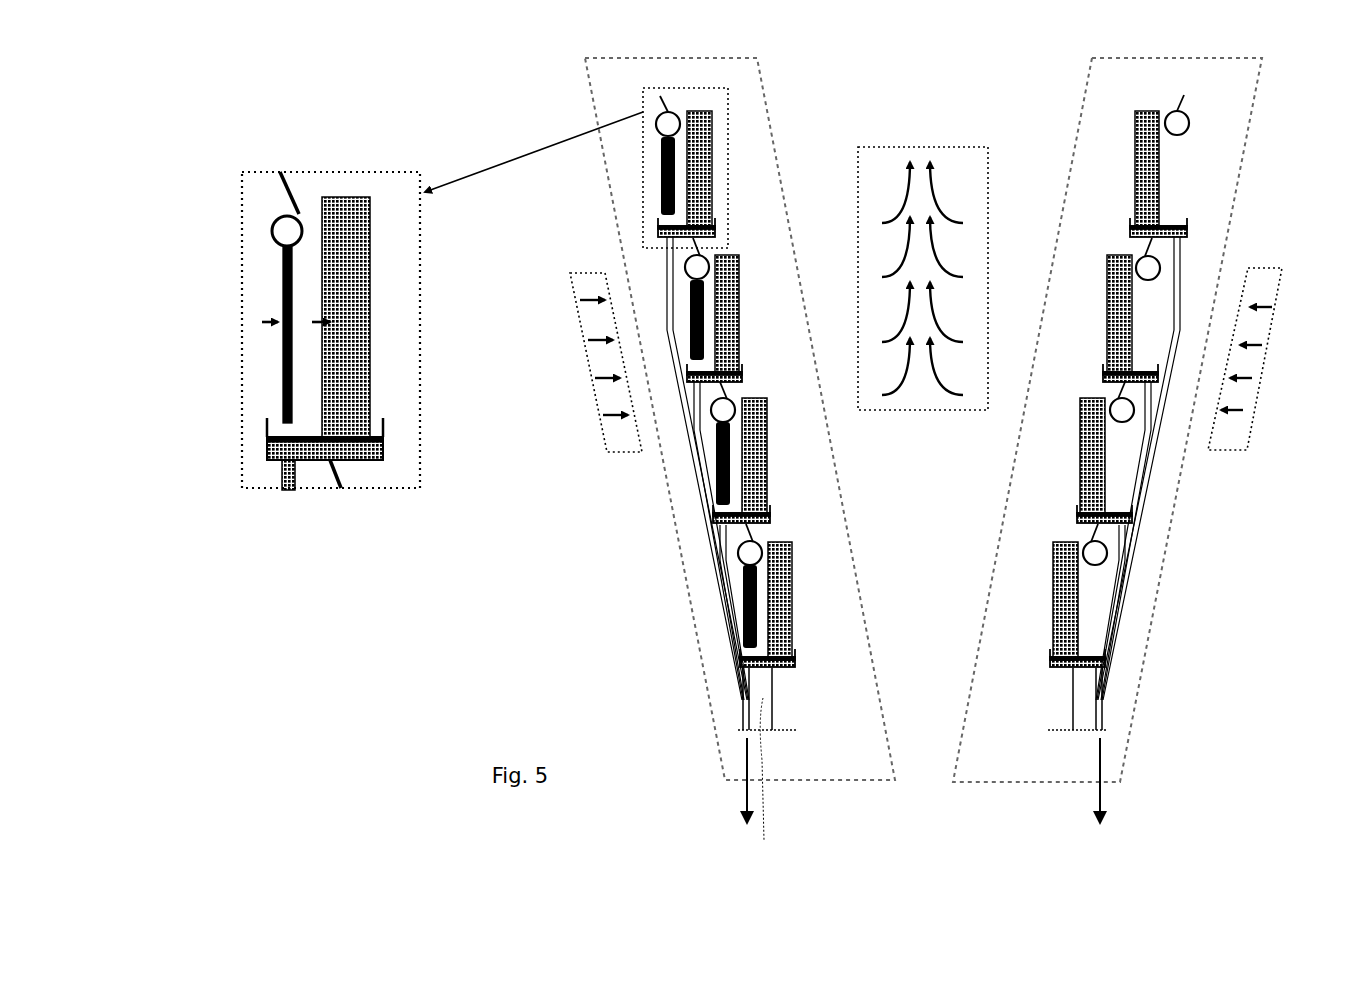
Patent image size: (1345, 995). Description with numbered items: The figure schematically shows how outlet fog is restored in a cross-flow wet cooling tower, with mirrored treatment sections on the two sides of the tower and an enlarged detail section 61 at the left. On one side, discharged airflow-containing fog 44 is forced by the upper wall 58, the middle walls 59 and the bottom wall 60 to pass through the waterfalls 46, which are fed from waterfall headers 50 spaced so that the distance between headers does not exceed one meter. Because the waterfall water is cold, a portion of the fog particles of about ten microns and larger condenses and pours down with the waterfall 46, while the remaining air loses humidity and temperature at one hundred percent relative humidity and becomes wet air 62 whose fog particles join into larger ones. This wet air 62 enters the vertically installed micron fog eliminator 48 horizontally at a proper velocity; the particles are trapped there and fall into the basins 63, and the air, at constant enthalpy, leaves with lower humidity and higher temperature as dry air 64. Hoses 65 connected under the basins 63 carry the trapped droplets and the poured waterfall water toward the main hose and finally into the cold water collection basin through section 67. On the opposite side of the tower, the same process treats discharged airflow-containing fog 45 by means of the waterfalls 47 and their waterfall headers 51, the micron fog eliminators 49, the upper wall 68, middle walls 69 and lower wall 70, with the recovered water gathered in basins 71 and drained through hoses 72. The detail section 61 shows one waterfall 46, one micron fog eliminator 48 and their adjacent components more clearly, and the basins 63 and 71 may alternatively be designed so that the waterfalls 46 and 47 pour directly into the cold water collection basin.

The discharged airflow-containing fog 44 is at (265, 322).
The discharged airflow-containing fog 45 is at (1265, 378).
The waterfall 46 is at (282, 390).
The waterfall 47 is at (1190, 196).
The micron fog eliminator 48 is at (371, 365).
The micron fog eliminator 49 is at (1145, 188).
The waterfall header 50 is at (275, 240).
The waterfall header 51 is at (1166, 125).
The upper wall 58 is at (278, 201).
The middle wall 59 is at (345, 480).
The bottom wall 60 is at (775, 692).
The section 61 is at (376, 172).
The wet air 62 is at (305, 290).
The basin 63 is at (275, 448).
The dry air 64 is at (396, 270).
The hose 65 is at (285, 490).
The section 67 is at (742, 783).
The upper wall 68 is at (1175, 100).
The middle wall 69 is at (1158, 252).
The lower wall 70 is at (1073, 692).
The basin 71 is at (1130, 233).
The hose 72 is at (1186, 242).